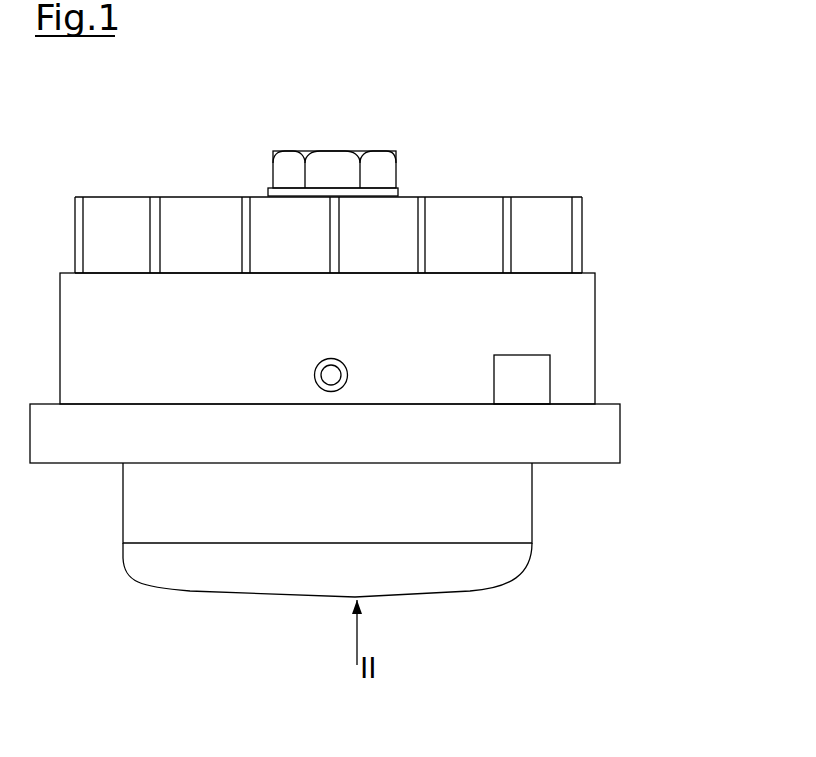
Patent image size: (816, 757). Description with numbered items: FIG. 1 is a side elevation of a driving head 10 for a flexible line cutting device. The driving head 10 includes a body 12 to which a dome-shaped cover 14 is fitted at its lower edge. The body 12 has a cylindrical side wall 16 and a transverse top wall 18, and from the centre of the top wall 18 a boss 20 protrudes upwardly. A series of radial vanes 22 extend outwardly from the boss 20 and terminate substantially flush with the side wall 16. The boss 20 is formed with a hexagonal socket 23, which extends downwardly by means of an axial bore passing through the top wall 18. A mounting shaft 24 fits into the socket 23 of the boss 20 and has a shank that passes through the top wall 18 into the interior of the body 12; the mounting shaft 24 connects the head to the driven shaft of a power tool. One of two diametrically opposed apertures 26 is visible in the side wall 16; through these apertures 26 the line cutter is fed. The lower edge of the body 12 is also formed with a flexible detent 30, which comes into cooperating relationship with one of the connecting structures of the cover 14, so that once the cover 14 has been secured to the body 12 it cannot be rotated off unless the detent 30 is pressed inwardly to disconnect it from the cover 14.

The driving head 10 is at (592, 135).
The body 12 is at (598, 318).
The dome-shaped cover 14 is at (542, 533).
The cylindrical side wall 16 is at (577, 375).
The transverse top wall 18 is at (545, 272).
The boss 20 is at (400, 193).
The radial vanes 22 is at (512, 222).
The hexagonal socket 23 is at (338, 150).
The mounting shaft 24 is at (268, 163).
The aperture 26 is at (322, 380).
The flexible detent 30 is at (532, 392).